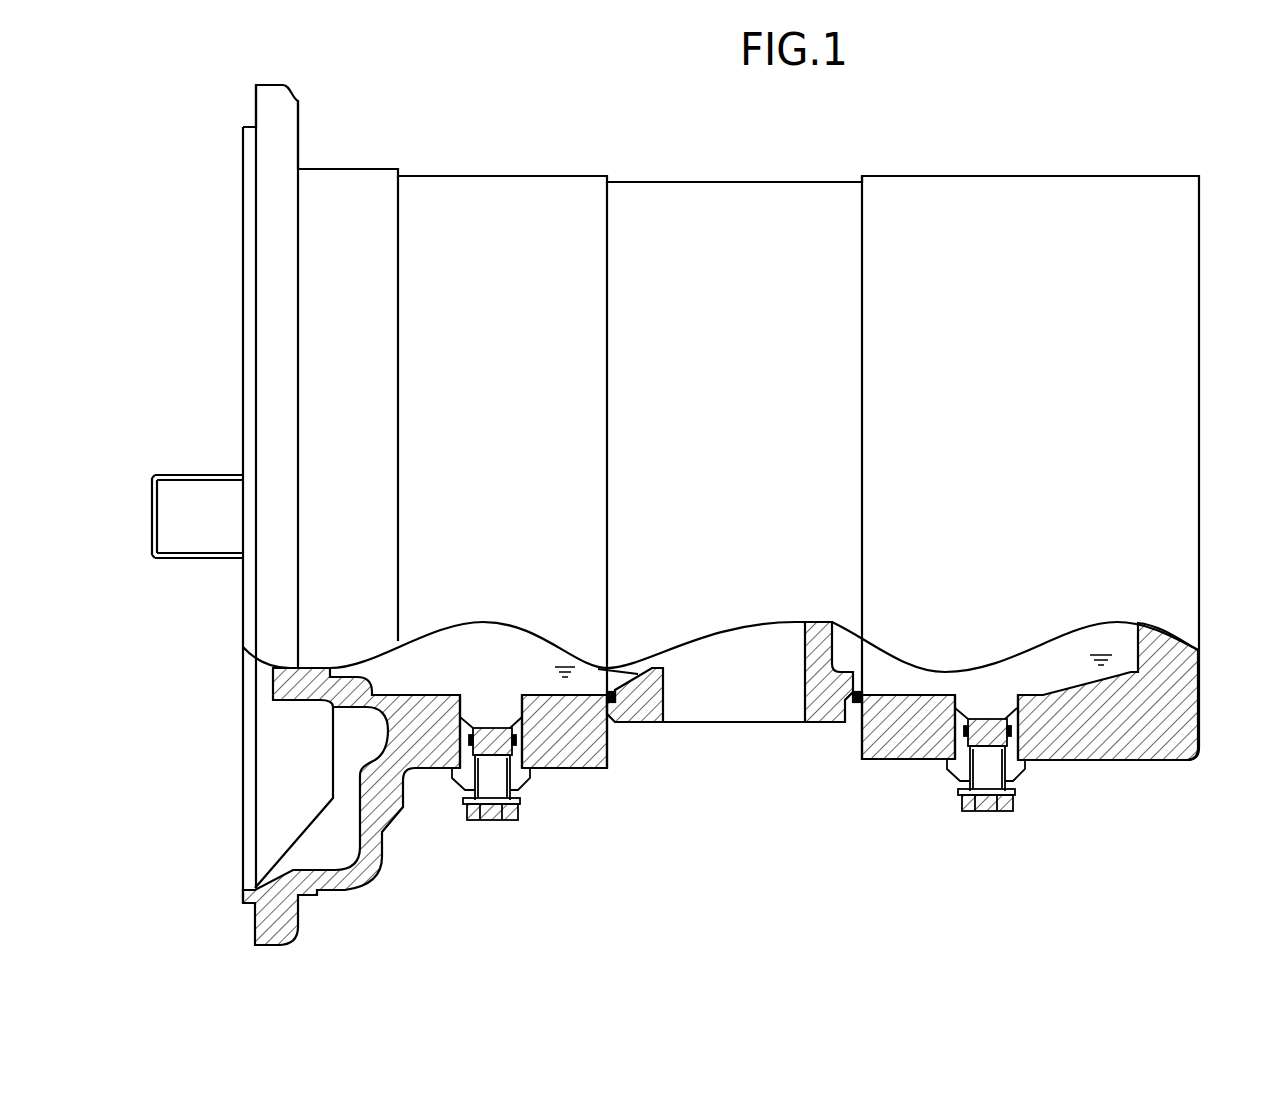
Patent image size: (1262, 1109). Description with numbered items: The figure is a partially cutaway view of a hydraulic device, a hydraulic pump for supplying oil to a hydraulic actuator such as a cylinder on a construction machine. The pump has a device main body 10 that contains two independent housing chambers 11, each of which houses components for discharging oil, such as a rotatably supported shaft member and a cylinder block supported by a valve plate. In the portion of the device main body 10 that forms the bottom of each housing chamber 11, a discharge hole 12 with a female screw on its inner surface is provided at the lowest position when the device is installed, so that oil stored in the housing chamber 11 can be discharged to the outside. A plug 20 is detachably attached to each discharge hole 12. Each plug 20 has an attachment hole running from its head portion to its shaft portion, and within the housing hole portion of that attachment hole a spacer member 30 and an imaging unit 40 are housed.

The device main body 10 is at (1180, 433).
The housing chamber 11 is at (599, 670).
The discharge hole 12 is at (513, 693).
The plug 20 is at (467, 792).
The spacer member 30 is at (489, 745).
The imaging unit 40 is at (487, 790).